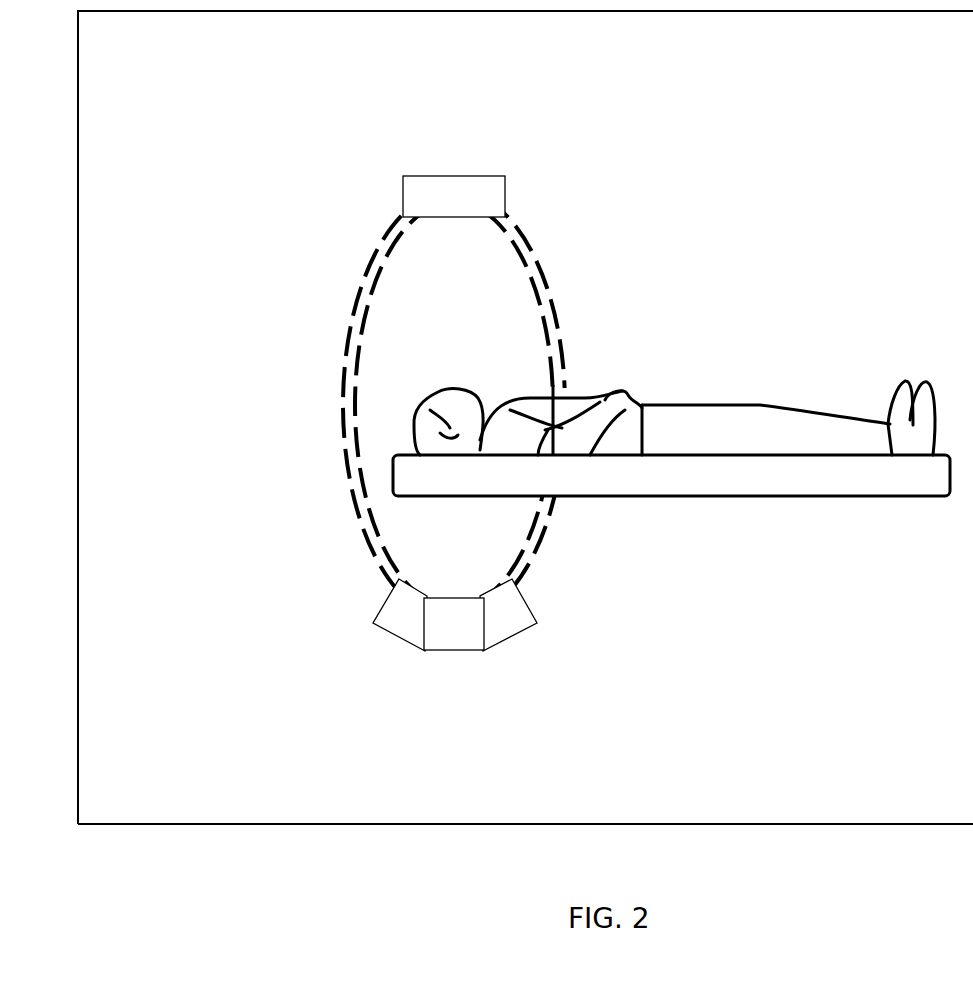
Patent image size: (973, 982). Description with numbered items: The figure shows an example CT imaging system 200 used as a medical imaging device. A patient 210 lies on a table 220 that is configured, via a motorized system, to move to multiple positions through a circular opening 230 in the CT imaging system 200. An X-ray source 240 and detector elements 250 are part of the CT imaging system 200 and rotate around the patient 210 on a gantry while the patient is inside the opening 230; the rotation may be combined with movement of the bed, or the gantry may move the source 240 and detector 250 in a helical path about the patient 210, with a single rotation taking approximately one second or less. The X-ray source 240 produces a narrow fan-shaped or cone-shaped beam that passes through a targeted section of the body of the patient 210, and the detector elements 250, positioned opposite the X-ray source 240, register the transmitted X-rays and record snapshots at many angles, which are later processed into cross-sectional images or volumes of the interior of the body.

The CT imaging system 200 is at (525, 417).
The patient 210 is at (685, 418).
The table 220 is at (735, 478).
The circular opening 230 is at (415, 318).
The X-ray source 240 is at (454, 196).
The detector element 250 is at (470, 625).